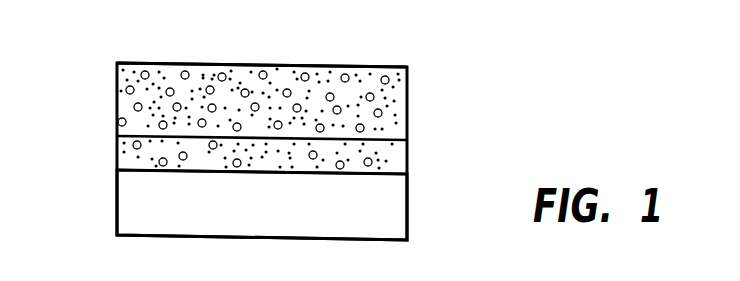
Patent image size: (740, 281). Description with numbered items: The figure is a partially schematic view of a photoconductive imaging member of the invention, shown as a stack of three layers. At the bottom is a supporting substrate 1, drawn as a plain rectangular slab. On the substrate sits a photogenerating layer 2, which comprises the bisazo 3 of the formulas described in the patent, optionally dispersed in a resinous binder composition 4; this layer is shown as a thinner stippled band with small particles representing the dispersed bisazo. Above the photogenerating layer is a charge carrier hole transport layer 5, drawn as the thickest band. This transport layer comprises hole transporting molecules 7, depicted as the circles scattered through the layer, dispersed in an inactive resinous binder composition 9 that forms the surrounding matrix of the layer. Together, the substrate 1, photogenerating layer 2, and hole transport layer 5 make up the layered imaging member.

The supporting substrate 1 is at (409, 222).
The photogenerating layer 2 is at (409, 164).
The bisazo 3 is at (142, 161).
The resinous binder composition 4 is at (130, 145).
The charge carrier hole transport layer 5 is at (409, 95).
The hole transporting molecules 7 is at (137, 75).
The inactive resinous binder composition 9 is at (305, 73).